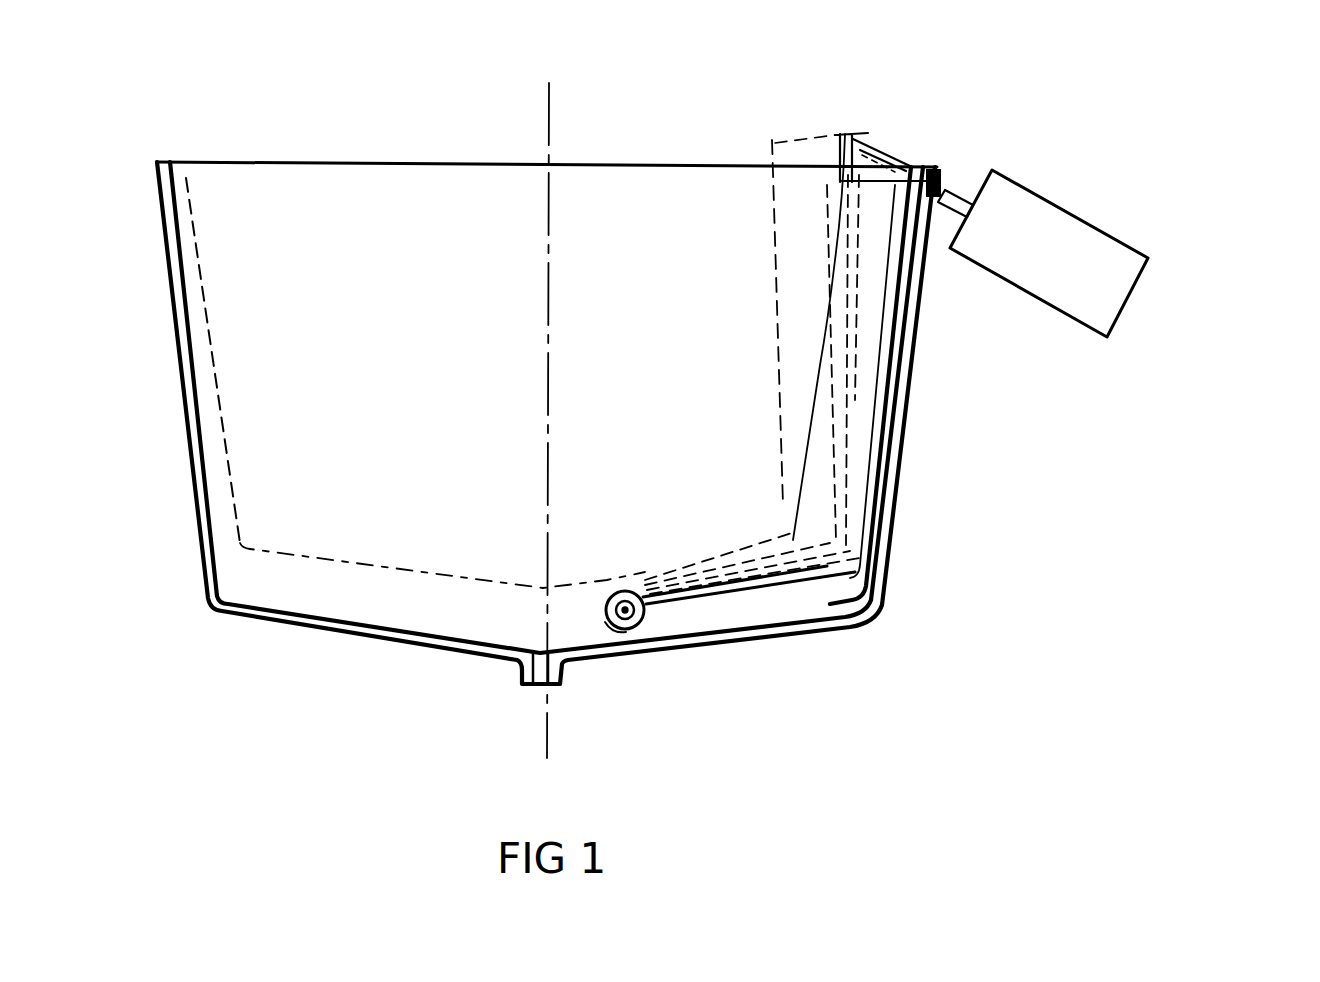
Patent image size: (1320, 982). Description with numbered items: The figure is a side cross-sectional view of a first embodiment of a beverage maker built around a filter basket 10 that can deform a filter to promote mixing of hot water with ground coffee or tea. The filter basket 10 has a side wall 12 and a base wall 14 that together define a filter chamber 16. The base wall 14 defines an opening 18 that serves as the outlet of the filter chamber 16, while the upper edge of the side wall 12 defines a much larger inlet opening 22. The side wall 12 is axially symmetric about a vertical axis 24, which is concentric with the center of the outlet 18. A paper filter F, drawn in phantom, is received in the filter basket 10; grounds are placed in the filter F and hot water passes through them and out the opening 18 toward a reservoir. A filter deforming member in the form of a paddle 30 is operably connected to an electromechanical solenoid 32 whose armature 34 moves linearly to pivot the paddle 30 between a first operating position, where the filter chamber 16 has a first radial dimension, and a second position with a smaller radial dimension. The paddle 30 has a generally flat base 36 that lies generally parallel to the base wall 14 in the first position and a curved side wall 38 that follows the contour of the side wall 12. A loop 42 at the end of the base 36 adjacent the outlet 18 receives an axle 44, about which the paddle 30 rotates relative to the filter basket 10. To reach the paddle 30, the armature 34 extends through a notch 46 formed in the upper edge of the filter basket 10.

The filter basket 10 is at (1106, 502).
The side wall 12 is at (898, 461).
The base wall 14 is at (790, 632).
The filter chamber 16 is at (412, 404).
The opening 18 is at (541, 687).
The inlet opening 22 is at (265, 181).
The vertical axis 24 is at (548, 306).
The paddle 30 is at (828, 562).
The electromechanical solenoid 32 is at (1097, 283).
The armature 34 is at (967, 187).
The base 36 is at (722, 587).
The curved side wall 38 is at (890, 404).
The loop 42 is at (607, 632).
The axle 44 is at (605, 596).
The notch 46 is at (921, 165).
The filter F is at (205, 306).